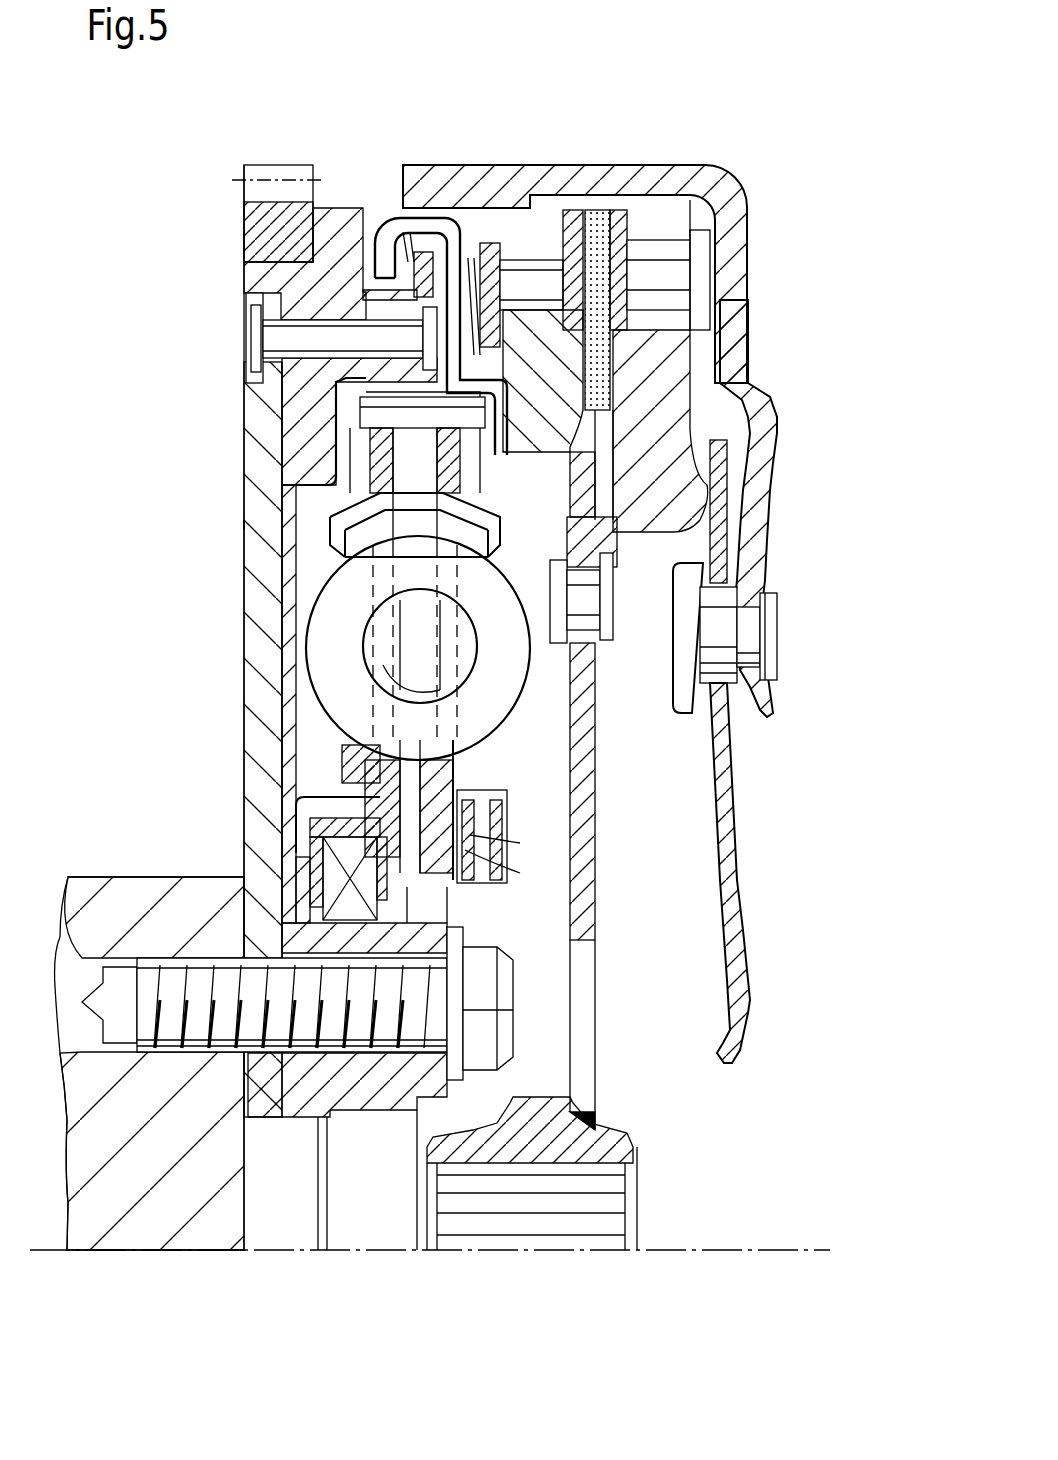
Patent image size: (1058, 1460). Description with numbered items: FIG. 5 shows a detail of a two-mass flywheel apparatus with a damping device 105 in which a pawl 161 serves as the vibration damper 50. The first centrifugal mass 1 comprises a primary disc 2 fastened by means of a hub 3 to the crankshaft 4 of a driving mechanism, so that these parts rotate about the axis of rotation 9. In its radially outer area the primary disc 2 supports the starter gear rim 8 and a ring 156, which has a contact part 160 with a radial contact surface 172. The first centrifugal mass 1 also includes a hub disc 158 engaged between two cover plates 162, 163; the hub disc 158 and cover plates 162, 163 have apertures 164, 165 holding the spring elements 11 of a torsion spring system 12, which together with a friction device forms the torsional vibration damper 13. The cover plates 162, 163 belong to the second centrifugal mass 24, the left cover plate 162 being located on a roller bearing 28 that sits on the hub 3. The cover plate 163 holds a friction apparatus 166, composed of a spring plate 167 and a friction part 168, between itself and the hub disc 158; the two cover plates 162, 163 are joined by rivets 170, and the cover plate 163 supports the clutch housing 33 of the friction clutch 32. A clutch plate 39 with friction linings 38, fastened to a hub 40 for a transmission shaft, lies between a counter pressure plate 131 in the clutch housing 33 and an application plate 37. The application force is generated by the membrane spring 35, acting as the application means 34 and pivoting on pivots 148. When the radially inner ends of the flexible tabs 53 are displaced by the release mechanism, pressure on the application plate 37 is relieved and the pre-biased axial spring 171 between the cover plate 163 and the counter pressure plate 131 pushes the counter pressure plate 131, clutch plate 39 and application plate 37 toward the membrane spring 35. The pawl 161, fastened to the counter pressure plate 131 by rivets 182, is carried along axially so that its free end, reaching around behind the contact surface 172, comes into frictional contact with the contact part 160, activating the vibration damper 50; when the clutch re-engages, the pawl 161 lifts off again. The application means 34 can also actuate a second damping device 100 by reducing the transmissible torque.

The first centrifugal mass 1 is at (244, 525).
The primary disc 2 is at (257, 470).
The hub 3 is at (290, 1112).
The crankshaft 4 is at (126, 1200).
The starter gear rim 8 is at (244, 215).
The axis of rotation 9 is at (822, 1258).
The spring elements 11 is at (318, 652).
The torsion spring system 12 is at (306, 683).
The torsional vibration damper 13 is at (533, 690).
The second centrifugal mass 24 is at (596, 212).
The roller bearing 28 is at (330, 880).
The friction clutch 32 is at (745, 172).
The clutch housing 33 is at (752, 412).
The application means 34 is at (722, 508).
The membrane spring 35 is at (717, 470).
The application plate 37 is at (677, 373).
The friction linings 38 is at (605, 215).
The clutch plate 39 is at (585, 1060).
The hub 40 is at (493, 1152).
The vibration damper 50 is at (403, 218).
The flexible tabs 53 is at (722, 852).
The second damping device 100 is at (627, 273).
The damping device 105 is at (290, 262).
The counter pressure plate 131 is at (548, 235).
The pivots 148 is at (765, 655).
The ring 156 is at (245, 285).
The hub disc 158 is at (320, 800).
The contact part 160 is at (290, 392).
The pawl 161 is at (437, 230).
The cover plate 162 is at (330, 582).
The cover plate 163 is at (500, 750).
The aperture 164 is at (420, 662).
The aperture 165 is at (465, 628).
The friction apparatus 166 is at (470, 835).
The spring plate 167 is at (465, 850).
The friction part 168 is at (445, 855).
The rivets 170 is at (355, 425).
The axial spring 171 is at (480, 270).
The contact surface 172 is at (395, 212).
The rivets 182 is at (520, 262).